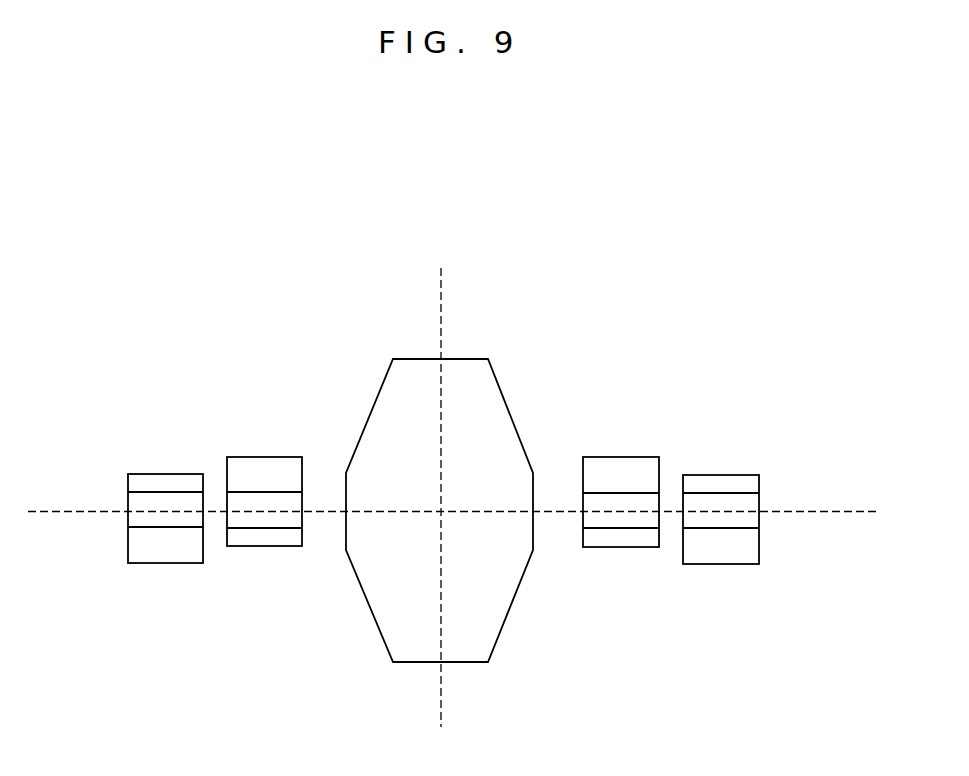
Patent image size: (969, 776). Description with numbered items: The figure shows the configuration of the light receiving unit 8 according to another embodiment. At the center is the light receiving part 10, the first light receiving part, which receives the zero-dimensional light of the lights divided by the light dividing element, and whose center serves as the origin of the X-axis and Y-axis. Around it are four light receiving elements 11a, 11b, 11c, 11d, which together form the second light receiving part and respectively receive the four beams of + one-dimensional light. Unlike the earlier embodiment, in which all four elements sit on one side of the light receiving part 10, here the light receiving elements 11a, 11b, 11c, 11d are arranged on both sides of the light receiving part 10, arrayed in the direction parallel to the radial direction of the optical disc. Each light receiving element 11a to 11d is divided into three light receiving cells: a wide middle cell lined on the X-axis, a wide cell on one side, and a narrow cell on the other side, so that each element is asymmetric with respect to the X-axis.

The light receiving unit 8 is at (590, 287).
The light receiving part 10 is at (408, 359).
The light receiving element 11a is at (627, 447).
The light receiving element 11b is at (727, 447).
The light receiving element 11c is at (260, 447).
The light receiving element 11d is at (160, 447).